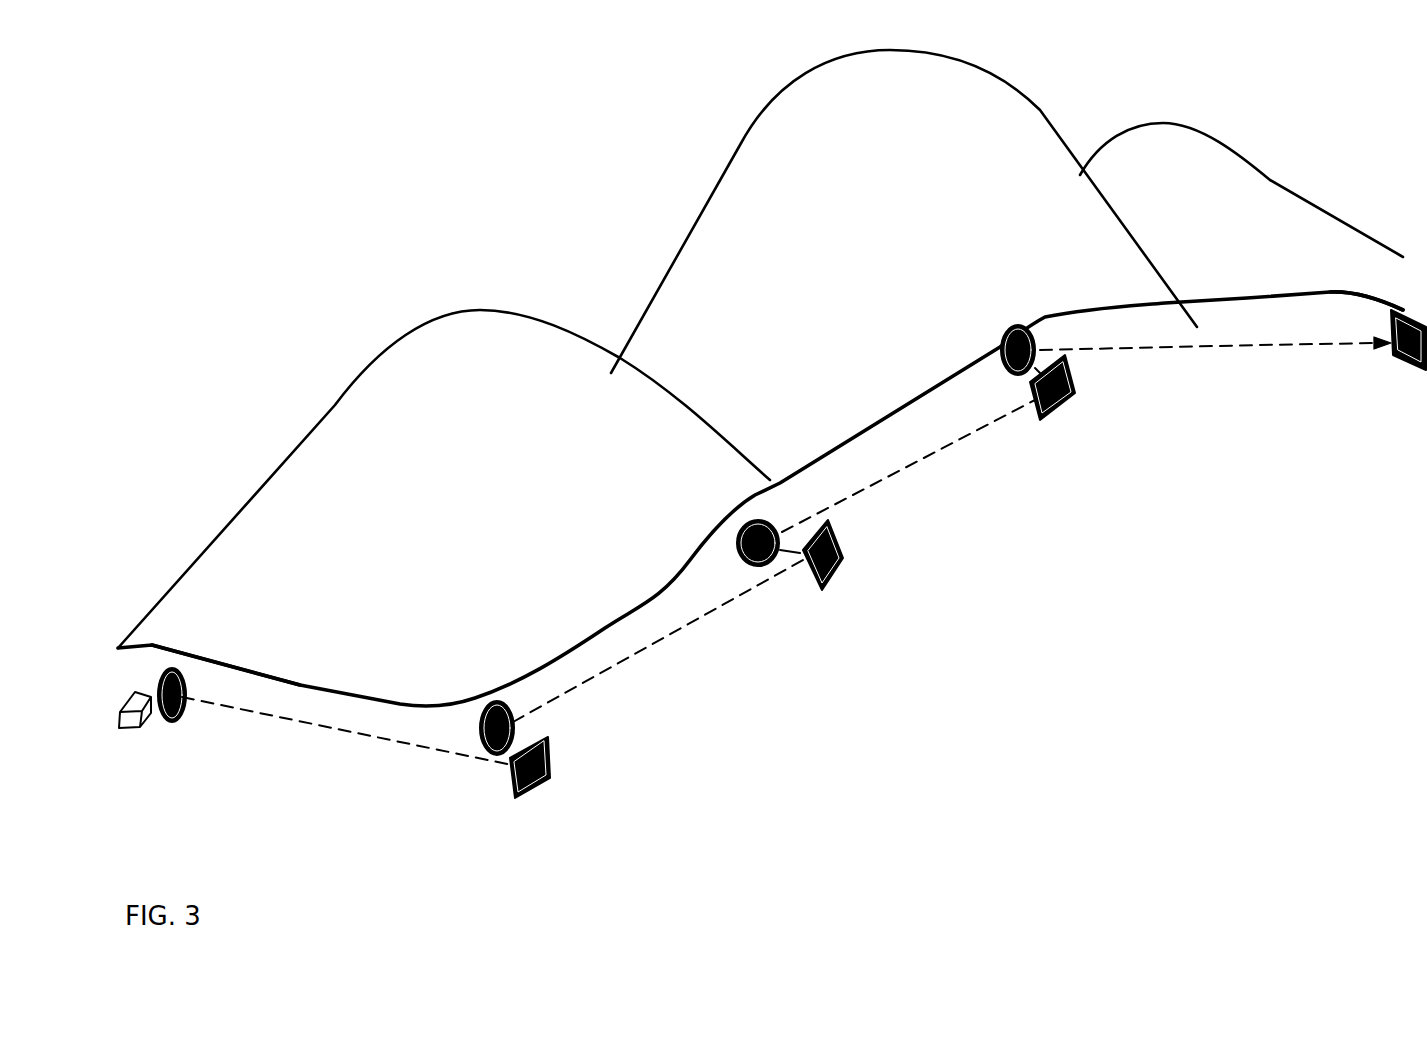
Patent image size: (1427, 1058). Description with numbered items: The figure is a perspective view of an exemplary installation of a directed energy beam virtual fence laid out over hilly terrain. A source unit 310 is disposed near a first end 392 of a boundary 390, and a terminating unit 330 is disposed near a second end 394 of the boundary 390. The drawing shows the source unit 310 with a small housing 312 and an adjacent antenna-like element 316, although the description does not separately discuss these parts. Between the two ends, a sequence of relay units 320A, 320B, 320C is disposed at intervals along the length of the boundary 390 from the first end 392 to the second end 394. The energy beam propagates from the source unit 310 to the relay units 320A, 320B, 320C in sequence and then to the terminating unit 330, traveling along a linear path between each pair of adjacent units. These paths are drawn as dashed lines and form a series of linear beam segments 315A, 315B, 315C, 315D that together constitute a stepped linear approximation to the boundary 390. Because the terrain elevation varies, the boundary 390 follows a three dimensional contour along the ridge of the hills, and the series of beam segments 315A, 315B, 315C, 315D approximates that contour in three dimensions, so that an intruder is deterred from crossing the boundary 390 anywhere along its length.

The source unit 310 is at (204, 765).
The transmitter housing 312 is at (130, 728).
The transmitter antenna 316 is at (168, 723).
The linear beam segment 315A is at (337, 728).
The linear beam segment 315B is at (628, 662).
The linear beam segment 315C is at (925, 457).
The linear beam segment 315D is at (1222, 342).
The relay unit 320A is at (494, 800).
The relay unit 320B is at (840, 603).
The relay unit 320C is at (1064, 445).
The terminating unit 330 is at (1408, 362).
The boundary 390 is at (692, 543).
The first end 392 is at (152, 645).
The second end 394 is at (1400, 308).